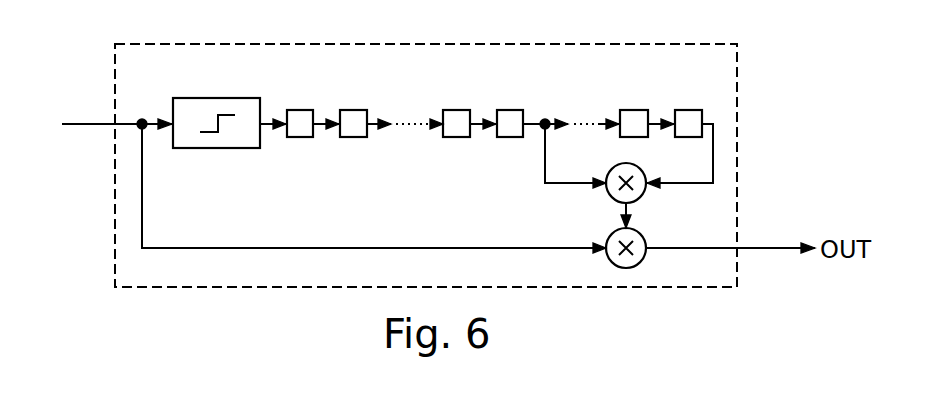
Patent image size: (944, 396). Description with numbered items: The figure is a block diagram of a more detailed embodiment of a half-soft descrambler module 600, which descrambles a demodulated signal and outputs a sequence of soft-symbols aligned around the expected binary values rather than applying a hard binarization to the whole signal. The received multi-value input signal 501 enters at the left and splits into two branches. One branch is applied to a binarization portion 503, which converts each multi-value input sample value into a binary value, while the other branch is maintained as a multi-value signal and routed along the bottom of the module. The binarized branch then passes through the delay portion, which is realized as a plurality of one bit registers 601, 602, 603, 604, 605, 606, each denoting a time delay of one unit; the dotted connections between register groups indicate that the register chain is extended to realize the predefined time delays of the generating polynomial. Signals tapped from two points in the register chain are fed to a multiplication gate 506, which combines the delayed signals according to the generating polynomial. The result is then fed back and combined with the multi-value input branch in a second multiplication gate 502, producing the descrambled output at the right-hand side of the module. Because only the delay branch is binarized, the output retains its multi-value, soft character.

The half-soft descrambler module 600 is at (737, 68).
The input signal 501 is at (80, 122).
The binarization portion 503 is at (243, 98).
The one bit register 601 is at (300, 110).
The one bit register 602 is at (352, 110).
The one bit register 603 is at (455, 110).
The one bit register 604 is at (508, 110).
The one bit register 605 is at (632, 110).
The one bit register 606 is at (687, 110).
The multiplication gate 506 is at (608, 193).
The multiplication gate 502 is at (608, 253).